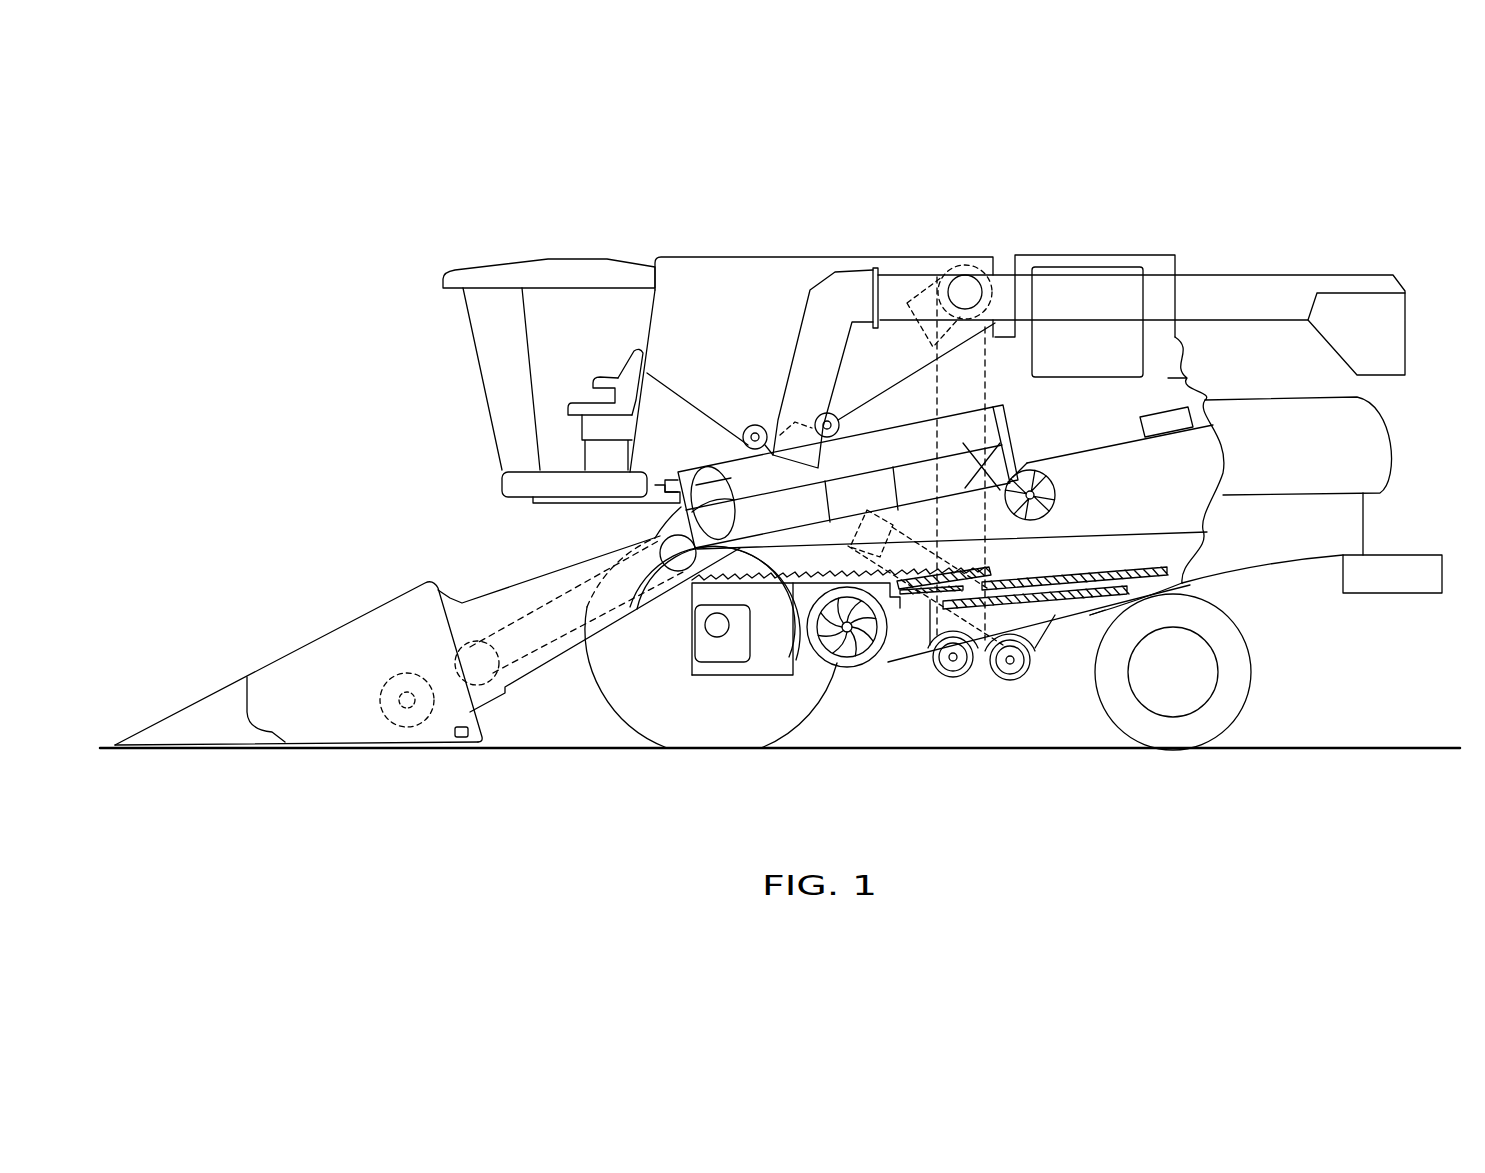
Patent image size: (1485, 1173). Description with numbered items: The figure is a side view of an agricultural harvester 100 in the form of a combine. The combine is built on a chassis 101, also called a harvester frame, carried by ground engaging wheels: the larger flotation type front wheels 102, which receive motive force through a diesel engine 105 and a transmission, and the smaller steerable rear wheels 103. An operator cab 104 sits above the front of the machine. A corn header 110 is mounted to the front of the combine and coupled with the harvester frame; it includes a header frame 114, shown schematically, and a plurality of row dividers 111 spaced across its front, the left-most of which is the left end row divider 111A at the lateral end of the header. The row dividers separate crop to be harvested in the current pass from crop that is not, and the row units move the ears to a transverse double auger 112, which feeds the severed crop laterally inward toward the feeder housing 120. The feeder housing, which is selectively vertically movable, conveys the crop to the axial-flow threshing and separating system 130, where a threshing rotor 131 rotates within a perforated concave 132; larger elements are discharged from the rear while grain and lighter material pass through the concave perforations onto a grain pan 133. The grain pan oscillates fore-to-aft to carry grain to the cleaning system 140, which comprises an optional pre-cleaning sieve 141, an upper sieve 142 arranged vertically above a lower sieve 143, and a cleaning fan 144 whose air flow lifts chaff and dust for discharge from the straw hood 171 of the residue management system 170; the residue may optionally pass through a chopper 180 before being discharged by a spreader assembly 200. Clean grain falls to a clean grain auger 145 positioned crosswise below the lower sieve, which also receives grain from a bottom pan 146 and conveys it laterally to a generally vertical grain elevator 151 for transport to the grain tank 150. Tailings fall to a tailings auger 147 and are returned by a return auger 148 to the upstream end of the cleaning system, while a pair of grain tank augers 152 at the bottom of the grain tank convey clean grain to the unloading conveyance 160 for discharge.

The agricultural harvester 100 is at (542, 245).
The chassis 101 is at (1192, 588).
The front wheels 102 is at (622, 700).
The rear wheels 103 is at (1248, 688).
The operator cab 104 is at (463, 340).
The diesel engine 105 is at (1075, 272).
The header 110 is at (283, 628).
The row dividers 111 is at (276, 661).
The left end row divider 111A is at (296, 743).
The auger 112 is at (403, 672).
The header frame 114 is at (462, 740).
The feeder housing 120 is at (517, 585).
The threshing and separating system 130 is at (632, 520).
The threshing rotor 131 is at (708, 478).
The perforated concave 132 is at (877, 460).
The grain pan 133 is at (685, 592).
The cleaning system 140 is at (897, 688).
The pre-cleaning sieve 141 is at (990, 576).
The upper sieve 142 is at (1080, 575).
The lower sieve 143 is at (1058, 602).
The cleaning fan 144 is at (840, 652).
The clean grain auger 145 is at (963, 665).
The bottom pan 146 is at (1092, 617).
The tailings auger 147 is at (1007, 680).
The return auger 148 is at (922, 550).
The grain tank 150 is at (707, 262).
The grain elevator 151 is at (987, 385).
The grain tank augers 152 is at (752, 426).
The unloading conveyance 160 is at (1265, 285).
The residue management system 170 is at (1340, 618).
The straw hood 171 is at (1375, 442).
The chopper 180 is at (1140, 430).
The spreader assembly 200 is at (1414, 550).